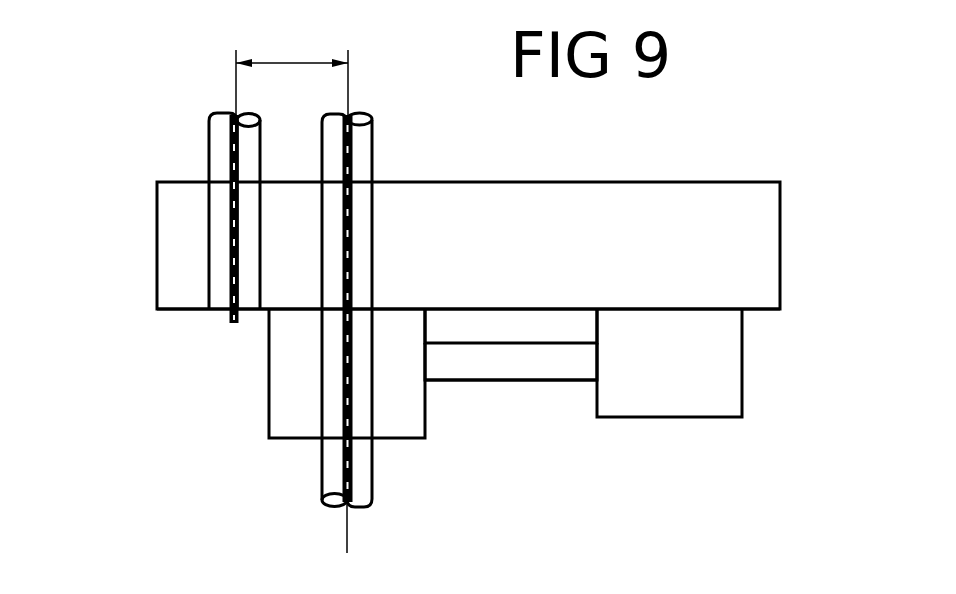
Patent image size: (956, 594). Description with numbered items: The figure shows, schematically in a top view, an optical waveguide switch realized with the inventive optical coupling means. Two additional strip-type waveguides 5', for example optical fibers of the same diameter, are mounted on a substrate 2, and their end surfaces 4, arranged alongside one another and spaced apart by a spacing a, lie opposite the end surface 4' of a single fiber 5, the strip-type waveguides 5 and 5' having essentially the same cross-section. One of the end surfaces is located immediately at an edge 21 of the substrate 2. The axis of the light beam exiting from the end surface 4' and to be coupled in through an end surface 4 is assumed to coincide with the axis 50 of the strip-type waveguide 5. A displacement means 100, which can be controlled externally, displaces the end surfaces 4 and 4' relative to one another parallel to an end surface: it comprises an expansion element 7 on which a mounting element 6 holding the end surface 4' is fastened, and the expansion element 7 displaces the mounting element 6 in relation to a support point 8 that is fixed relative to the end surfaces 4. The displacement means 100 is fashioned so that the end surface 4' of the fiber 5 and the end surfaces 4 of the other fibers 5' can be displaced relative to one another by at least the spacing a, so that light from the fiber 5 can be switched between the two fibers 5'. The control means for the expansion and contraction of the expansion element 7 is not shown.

The substrate 2 is at (692, 212).
The edge of the substrate 21 is at (533, 327).
The waveguide end surface 4 is at (255, 254).
The waveguide end surface 4' is at (401, 308).
The strip-type waveguide 5 is at (292, 310).
The strip-type waveguide 5' is at (288, 306).
The mounting element 6 is at (293, 413).
The expansion element 7 is at (547, 368).
The support point 8 is at (718, 372).
The axis of the strip-type waveguide 50 is at (345, 528).
The displacement means 100 is at (483, 392).
The spacing a is at (292, 66).